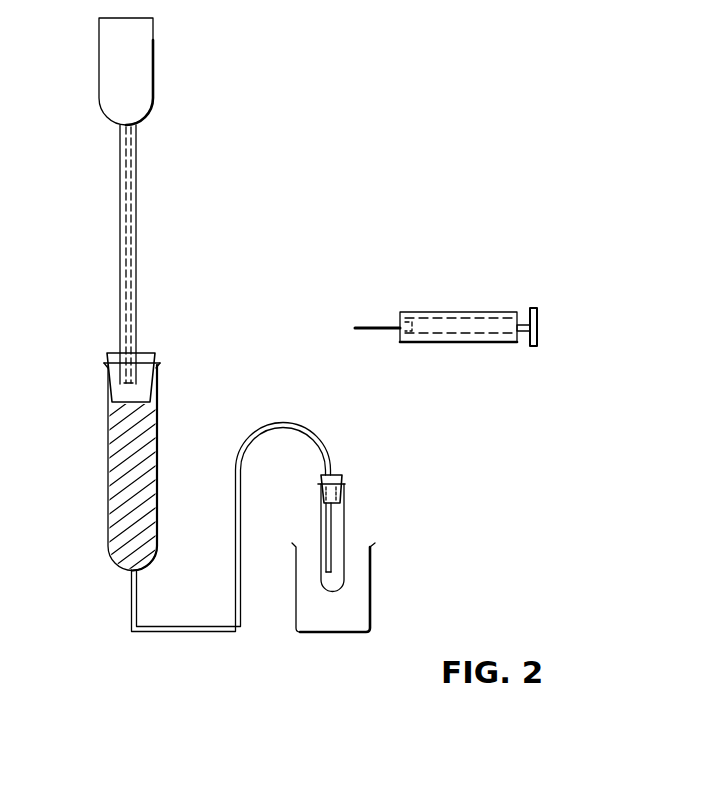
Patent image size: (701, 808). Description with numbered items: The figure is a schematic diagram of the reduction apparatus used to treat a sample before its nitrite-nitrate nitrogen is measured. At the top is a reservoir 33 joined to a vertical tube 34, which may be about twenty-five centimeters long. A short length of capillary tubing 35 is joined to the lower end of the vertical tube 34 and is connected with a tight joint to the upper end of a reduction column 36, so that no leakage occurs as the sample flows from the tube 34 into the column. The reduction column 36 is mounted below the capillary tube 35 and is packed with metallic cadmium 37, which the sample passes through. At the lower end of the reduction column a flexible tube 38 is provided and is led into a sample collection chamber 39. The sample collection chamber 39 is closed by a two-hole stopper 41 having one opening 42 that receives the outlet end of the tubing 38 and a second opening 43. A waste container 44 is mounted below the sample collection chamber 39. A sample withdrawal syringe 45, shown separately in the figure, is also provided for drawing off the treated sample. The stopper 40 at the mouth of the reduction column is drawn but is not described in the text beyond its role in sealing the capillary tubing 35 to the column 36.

The reservoir 33 is at (153, 92).
The vertical tube 34 is at (137, 234).
The capillary tubing 35 is at (104, 368).
The reduction column 36 is at (108, 437).
The metallic cadmium 37 is at (122, 492).
The flexible tube 38 is at (283, 422).
The sample collection chamber 39 is at (345, 532).
The stopper 40 is at (144, 354).
The two-hole stopper 41 is at (333, 474).
The opening 42 is at (318, 478).
The second opening 43 is at (350, 478).
The waste container 44 is at (371, 592).
The sample withdrawal syringe 45 is at (447, 312).